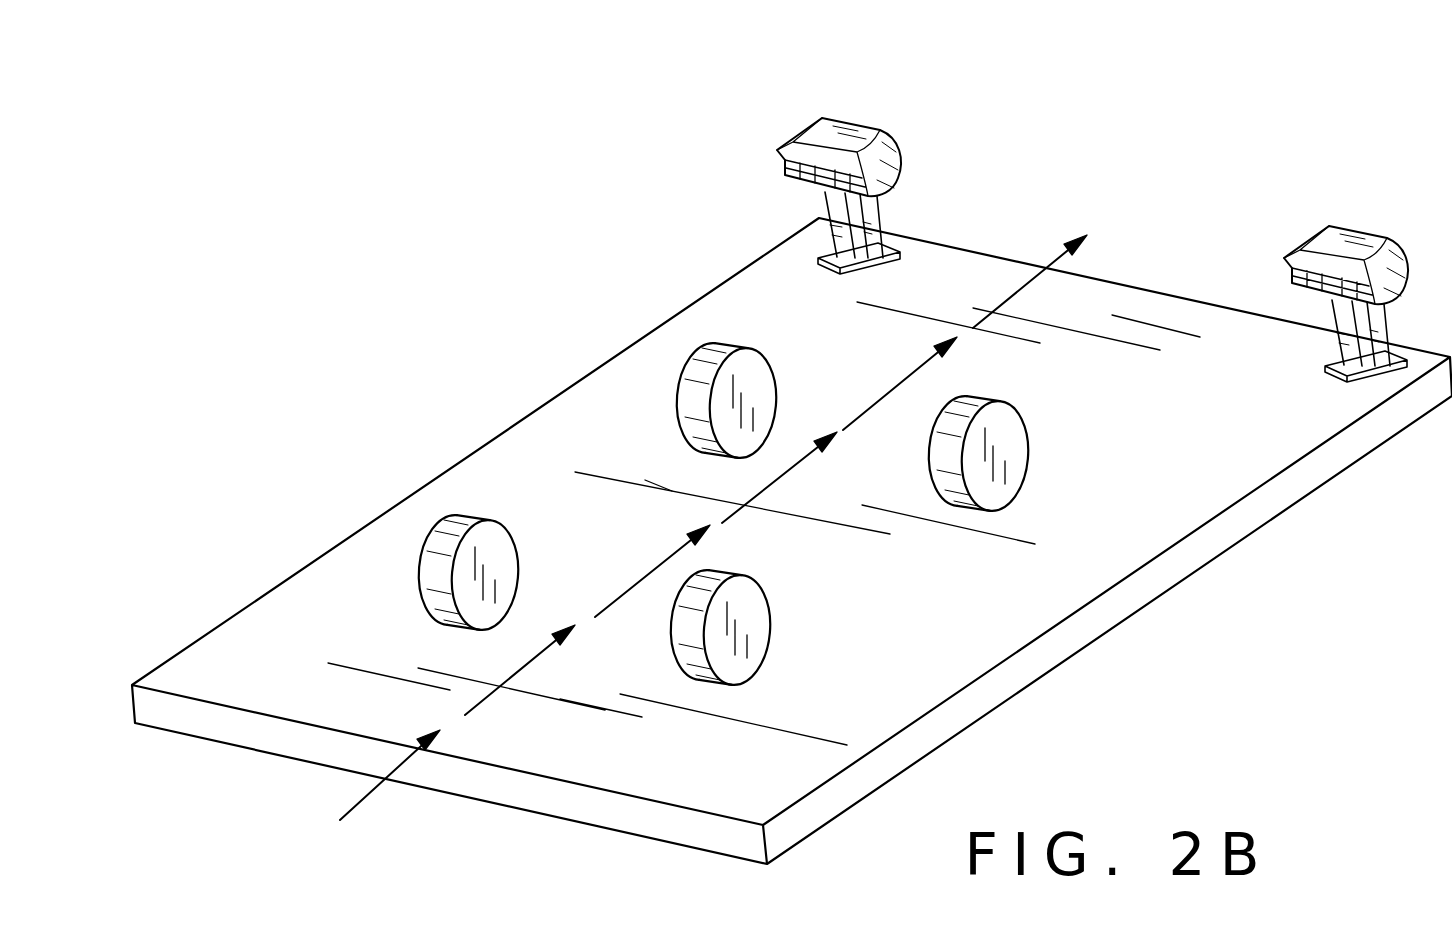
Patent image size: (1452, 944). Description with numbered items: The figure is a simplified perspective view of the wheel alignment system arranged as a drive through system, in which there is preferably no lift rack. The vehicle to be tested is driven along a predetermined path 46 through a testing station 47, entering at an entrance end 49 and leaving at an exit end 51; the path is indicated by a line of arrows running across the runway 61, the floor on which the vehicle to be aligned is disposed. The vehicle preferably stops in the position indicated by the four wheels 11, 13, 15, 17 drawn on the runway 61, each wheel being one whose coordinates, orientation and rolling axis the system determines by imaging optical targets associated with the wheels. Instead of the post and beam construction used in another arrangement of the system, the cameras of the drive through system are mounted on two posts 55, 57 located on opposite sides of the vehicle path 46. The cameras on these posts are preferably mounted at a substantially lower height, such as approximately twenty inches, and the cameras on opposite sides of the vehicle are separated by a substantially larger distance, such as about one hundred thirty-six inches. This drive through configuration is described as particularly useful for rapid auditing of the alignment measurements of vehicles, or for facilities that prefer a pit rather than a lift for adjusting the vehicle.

The vehicle wheel 11 is at (735, 348).
The vehicle wheel 13 is at (472, 516).
The vehicle wheel 15 is at (705, 680).
The vehicle wheel 17 is at (952, 505).
The predetermined path 46 is at (780, 482).
The testing station 47 is at (512, 400).
The entrance end 49 is at (501, 694).
The exit end 51 is at (928, 365).
The post 55 is at (868, 116).
The post 57 is at (1380, 222).
The runway 61 is at (1087, 535).